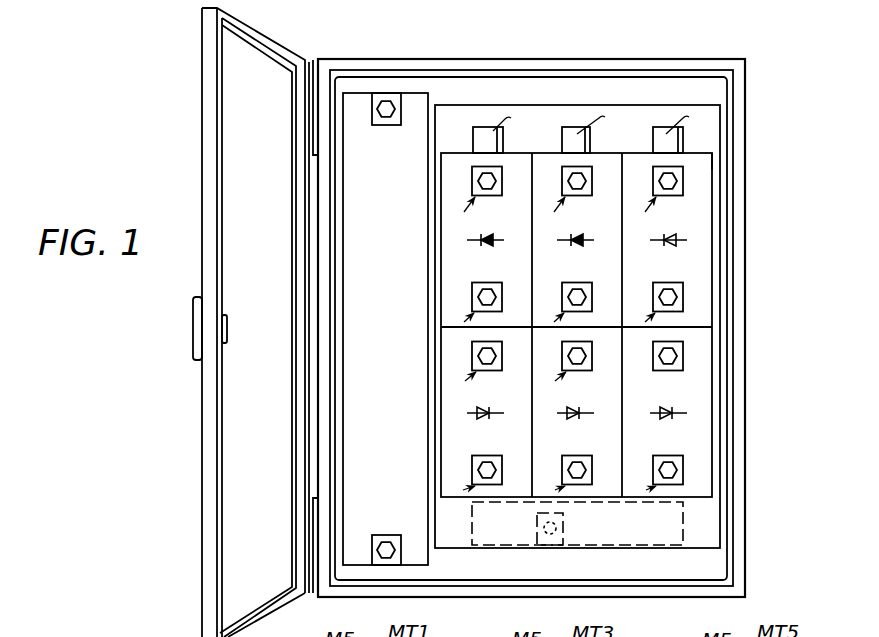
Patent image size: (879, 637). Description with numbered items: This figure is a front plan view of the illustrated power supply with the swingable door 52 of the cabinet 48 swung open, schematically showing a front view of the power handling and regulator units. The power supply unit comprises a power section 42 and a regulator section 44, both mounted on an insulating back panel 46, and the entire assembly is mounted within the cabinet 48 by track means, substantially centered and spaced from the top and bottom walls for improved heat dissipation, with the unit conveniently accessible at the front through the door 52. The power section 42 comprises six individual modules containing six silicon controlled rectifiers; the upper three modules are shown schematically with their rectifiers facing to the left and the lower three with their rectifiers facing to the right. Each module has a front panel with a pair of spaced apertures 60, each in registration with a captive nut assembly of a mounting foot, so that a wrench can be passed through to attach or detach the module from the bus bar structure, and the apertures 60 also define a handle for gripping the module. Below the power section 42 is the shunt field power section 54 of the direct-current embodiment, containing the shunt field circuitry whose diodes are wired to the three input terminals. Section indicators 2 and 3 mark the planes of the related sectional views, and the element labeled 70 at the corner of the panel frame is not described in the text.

The section line 2- 2 is at (359, 80).
The section line 3- 3 is at (721, 83).
The power section 42 is at (552, 128).
The regulator section 44 is at (405, 382).
The insulating back panel 46 is at (652, 85).
The cabinet 48 is at (762, 252).
The swingable door 52 is at (202, 108).
The shunt field power section 54 is at (527, 548).
The spaced apertures 60 is at (578, 328).
The panel mounting flange 70 is at (709, 134).